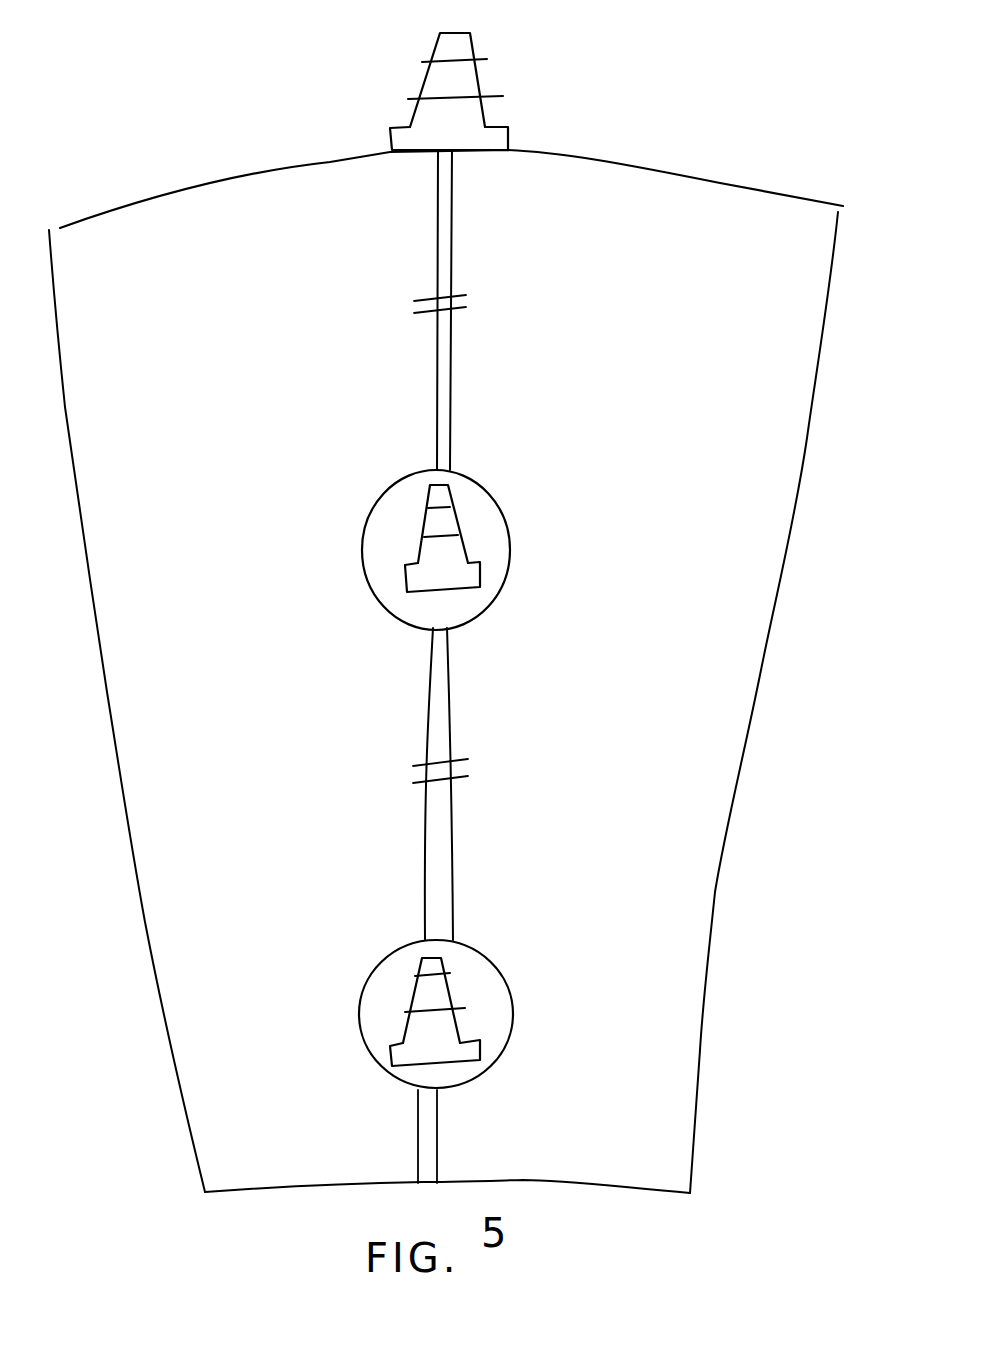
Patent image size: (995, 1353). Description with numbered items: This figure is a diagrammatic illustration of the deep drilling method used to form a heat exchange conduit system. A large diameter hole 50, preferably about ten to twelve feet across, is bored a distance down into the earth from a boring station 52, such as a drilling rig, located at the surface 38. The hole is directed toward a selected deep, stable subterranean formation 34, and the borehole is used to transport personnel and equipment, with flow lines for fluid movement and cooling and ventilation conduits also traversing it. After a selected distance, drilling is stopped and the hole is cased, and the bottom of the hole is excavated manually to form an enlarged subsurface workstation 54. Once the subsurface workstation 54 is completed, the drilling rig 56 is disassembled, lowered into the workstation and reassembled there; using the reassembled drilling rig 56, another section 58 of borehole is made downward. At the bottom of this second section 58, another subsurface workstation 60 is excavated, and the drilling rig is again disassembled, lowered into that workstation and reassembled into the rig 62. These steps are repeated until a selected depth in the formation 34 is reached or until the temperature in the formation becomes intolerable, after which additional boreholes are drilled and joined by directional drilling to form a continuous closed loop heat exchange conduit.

The subterranean formation 34 is at (307, 797).
The surface 38 is at (725, 180).
The large diameter hole 50 is at (450, 243).
The boring station 52 is at (478, 82).
The subsurface workstation 54 is at (499, 537).
The drilling rig 56 is at (423, 543).
The section of borehole 58 is at (448, 738).
The subsurface workstation 60 is at (506, 1001).
The drilling rig 62 is at (420, 1002).